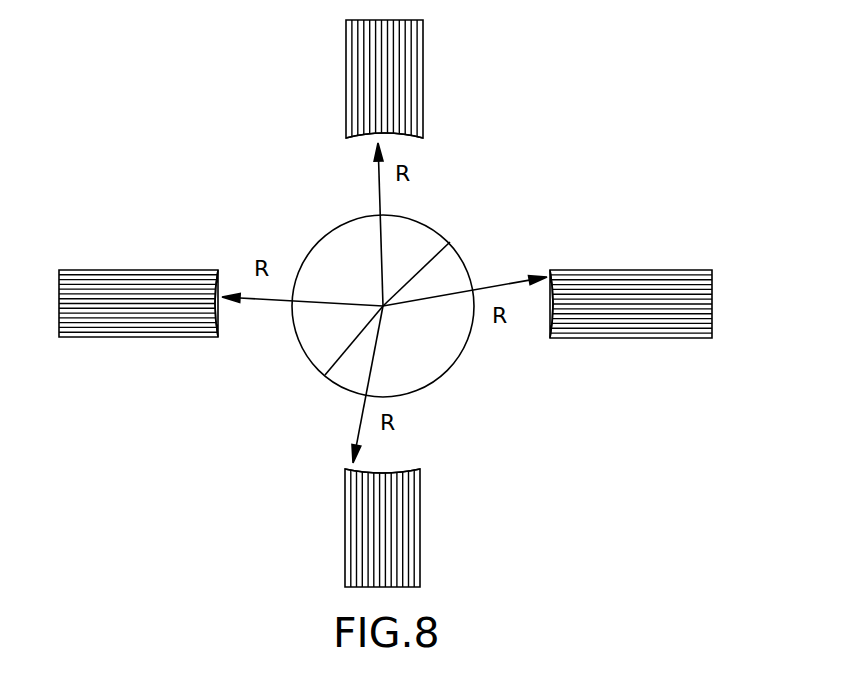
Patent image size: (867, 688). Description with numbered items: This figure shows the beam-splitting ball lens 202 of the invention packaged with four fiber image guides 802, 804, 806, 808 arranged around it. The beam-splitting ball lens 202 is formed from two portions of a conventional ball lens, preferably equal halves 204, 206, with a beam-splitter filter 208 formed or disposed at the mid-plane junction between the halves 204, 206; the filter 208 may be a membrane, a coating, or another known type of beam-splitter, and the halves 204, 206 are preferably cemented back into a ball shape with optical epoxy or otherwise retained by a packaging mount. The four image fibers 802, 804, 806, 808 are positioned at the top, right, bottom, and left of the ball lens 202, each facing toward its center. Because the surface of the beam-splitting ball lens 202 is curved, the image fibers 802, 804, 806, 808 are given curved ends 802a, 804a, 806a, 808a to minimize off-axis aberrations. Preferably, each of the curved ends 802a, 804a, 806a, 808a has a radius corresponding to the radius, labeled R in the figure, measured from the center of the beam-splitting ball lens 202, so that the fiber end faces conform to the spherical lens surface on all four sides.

The beam-splitting ball lens 202 is at (316, 392).
The half 204 is at (338, 244).
The half 206 is at (457, 258).
The beam-splitter filter 208 is at (345, 348).
The fiber image guide 802 is at (412, 68).
The curved end 802a is at (398, 136).
The fiber image guide 804 is at (648, 285).
The curved end 804a is at (548, 327).
The fiber image guide 806 is at (398, 507).
The curved end 806a is at (400, 470).
The fiber image guide 808 is at (119, 270).
The curved end 808a is at (220, 327).